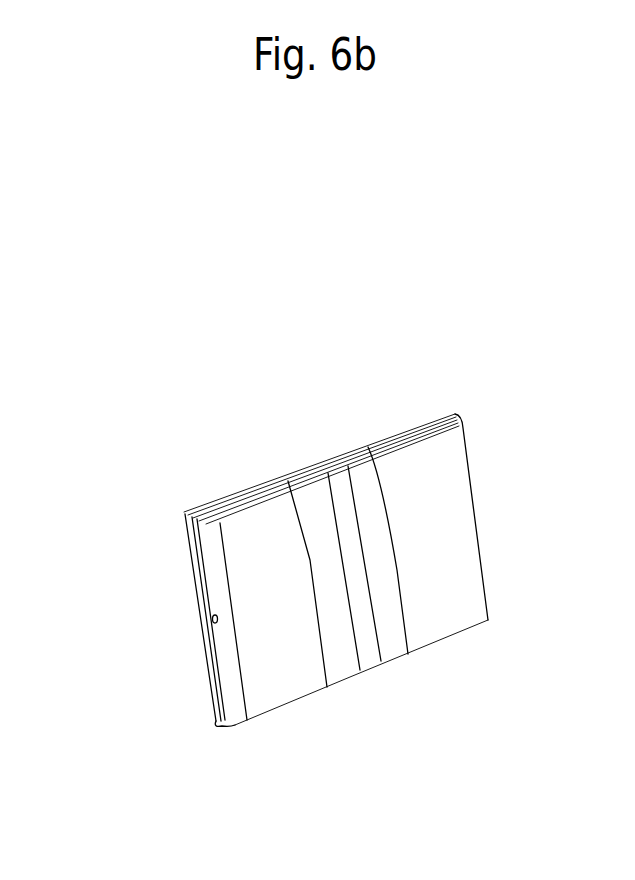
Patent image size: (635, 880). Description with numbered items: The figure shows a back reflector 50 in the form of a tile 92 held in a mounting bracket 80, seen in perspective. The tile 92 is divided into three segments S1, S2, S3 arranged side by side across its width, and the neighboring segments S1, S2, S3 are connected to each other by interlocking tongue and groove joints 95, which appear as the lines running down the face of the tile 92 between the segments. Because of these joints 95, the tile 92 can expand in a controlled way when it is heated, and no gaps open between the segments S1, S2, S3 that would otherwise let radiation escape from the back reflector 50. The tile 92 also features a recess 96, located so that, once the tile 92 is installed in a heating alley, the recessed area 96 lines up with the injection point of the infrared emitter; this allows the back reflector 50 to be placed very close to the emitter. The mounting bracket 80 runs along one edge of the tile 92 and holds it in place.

The back reflector 50 is at (385, 512).
The tile 92 is at (437, 498).
The mounting bracket 80 is at (236, 483).
The interlocking tongue and groove joints 95 is at (297, 497).
The recess 96 is at (350, 510).
The segment S1 is at (427, 638).
The segment S2 is at (338, 676).
The segment S3 is at (277, 688).